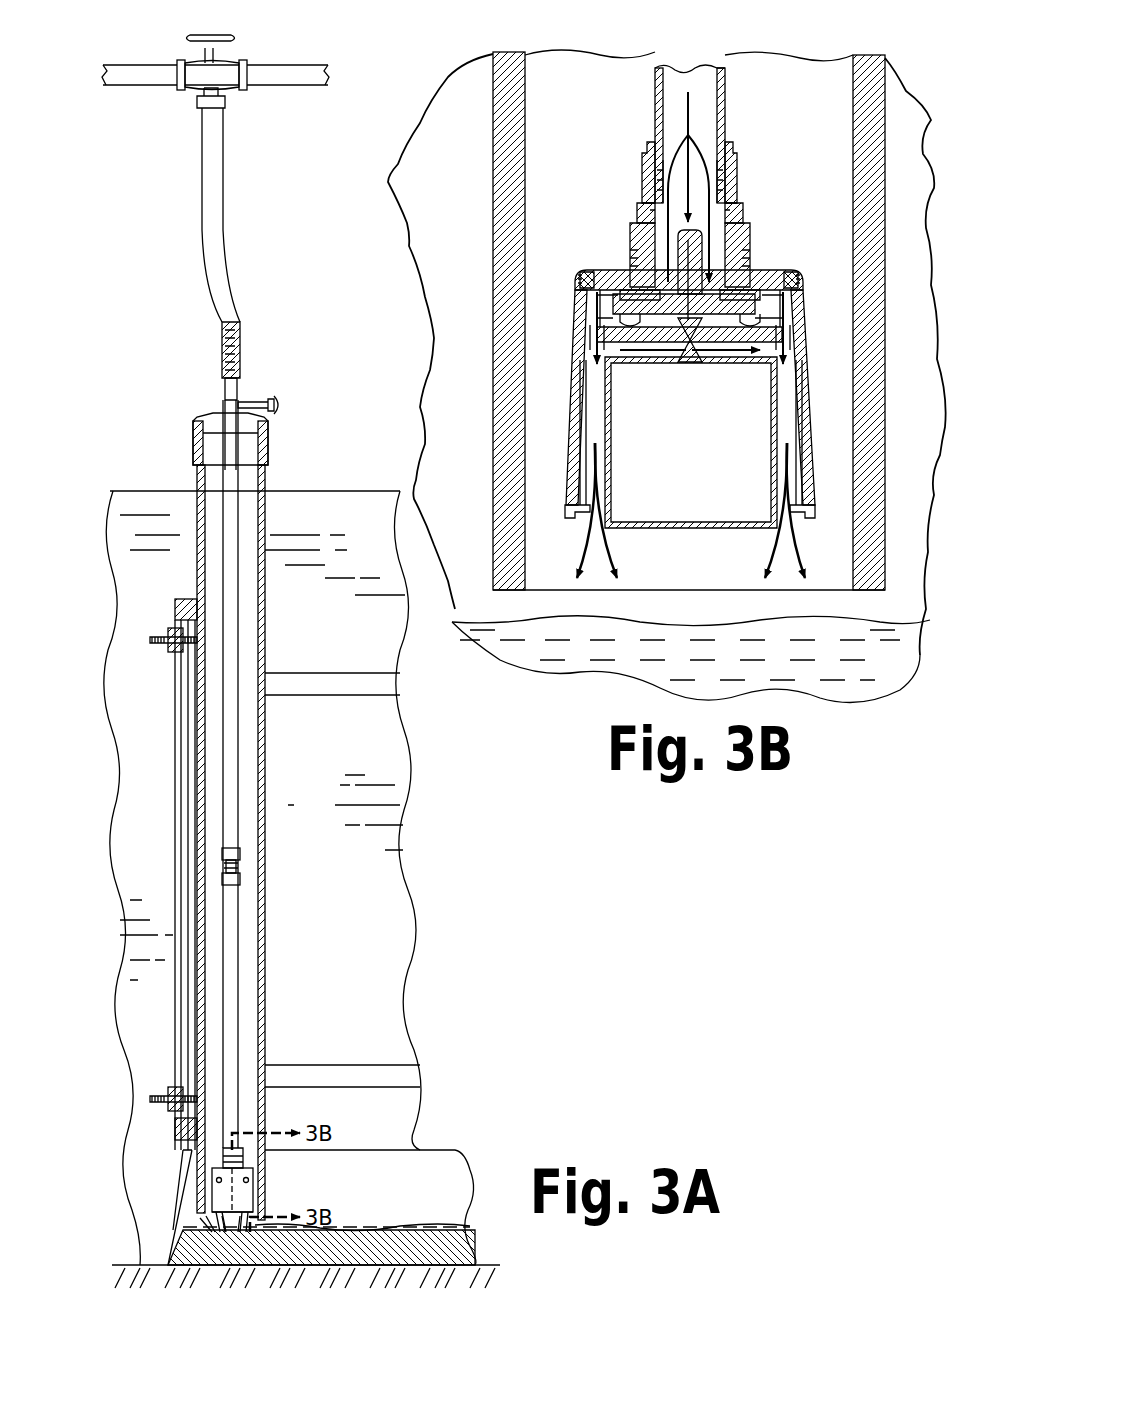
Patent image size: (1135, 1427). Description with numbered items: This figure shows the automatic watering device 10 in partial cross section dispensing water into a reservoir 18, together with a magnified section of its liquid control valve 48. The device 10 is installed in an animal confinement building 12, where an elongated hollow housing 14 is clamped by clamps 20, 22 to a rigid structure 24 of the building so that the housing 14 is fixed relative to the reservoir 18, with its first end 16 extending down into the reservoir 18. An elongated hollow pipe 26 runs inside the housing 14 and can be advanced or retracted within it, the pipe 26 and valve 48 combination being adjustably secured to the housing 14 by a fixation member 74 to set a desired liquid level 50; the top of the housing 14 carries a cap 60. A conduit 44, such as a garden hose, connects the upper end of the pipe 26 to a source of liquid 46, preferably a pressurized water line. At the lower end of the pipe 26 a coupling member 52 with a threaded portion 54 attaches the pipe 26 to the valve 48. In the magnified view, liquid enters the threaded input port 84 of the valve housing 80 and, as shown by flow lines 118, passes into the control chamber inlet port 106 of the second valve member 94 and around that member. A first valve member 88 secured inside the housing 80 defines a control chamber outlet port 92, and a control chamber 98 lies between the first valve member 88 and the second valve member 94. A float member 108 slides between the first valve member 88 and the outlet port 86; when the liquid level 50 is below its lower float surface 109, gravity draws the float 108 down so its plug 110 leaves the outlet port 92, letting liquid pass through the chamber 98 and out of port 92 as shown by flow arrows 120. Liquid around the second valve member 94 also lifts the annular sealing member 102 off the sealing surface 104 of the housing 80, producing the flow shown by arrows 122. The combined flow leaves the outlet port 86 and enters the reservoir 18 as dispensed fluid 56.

In FIG. 3A, the automatic watering device 10 is at (165, 472).
In FIG. 3A, the animal confinement building 12 is at (356, 491).
In FIG. 3A, the elongated hollow housing 14 is at (268, 476).
In FIG. 3B, the elongated hollow housing 14 is at (887, 112).
In FIG. 3A, the first end of housing 16 is at (205, 1205).
In FIG. 3B, the first end of housing 16 is at (843, 590).
In FIG. 3A, the reservoir 18 is at (455, 1148).
In FIG. 3A, the clamp 20 is at (175, 617).
In FIG. 3A, the clamp 22 is at (175, 1098).
In FIG. 3A, the rigid structure 24 is at (173, 733).
In FIG. 3A, the elongated hollow pipe 26 is at (232, 598).
In FIG. 3B, the elongated hollow pipe 26 is at (722, 90).
In FIG. 3A, the conduit 44 is at (216, 146).
In FIG. 3A, the source of liquid 46 is at (288, 68).
In FIG. 3A, the liquid control valve 48 is at (214, 1192).
In FIG. 3B, the liquid control valve 48 is at (803, 298).
In FIG. 3A, the desired level of liquid 50 is at (430, 1228).
In FIG. 3B, the desired level of liquid 50 is at (505, 618).
In FIG. 3B, the coupling member 52 is at (737, 160).
In FIG. 3B, the threaded portion 54 is at (743, 222).
In FIG. 3A, the dispensed fluid 56 is at (212, 1224).
In FIG. 3B, the dispensed fluid 56 is at (600, 545).
In FIG. 3A, the cap 60 is at (200, 415).
In FIG. 3A, the fixation member 74 is at (258, 400).
In FIG. 3B, the hollow housing 80 is at (814, 370).
In FIG. 3B, the threaded input port 84 is at (705, 160).
In FIG. 3B, the outlet port 86 is at (590, 522).
In FIG. 3B, the first valve member 88 is at (590, 340).
In FIG. 3B, the control chamber outlet port 92 is at (686, 360).
In FIG. 3B, the second valve member 94 is at (630, 250).
In FIG. 3B, the control chamber 98 is at (792, 340).
In FIG. 3B, the annular sealing member 102 is at (600, 283).
In FIG. 3B, the sealing surface 104 is at (632, 292).
In FIG. 3B, the control chamber inlet port 106 is at (680, 240).
In FIG. 3B, the float member 108 is at (770, 440).
In FIG. 3B, the lower float surface 109 is at (695, 528).
In FIG. 3B, the plug 110 is at (700, 342).
In FIG. 3B, the liquid flow lines 118 is at (680, 102).
In FIG. 3B, the flow arrows 120 is at (632, 357).
In FIG. 3B, the flow arrows 122 is at (598, 300).